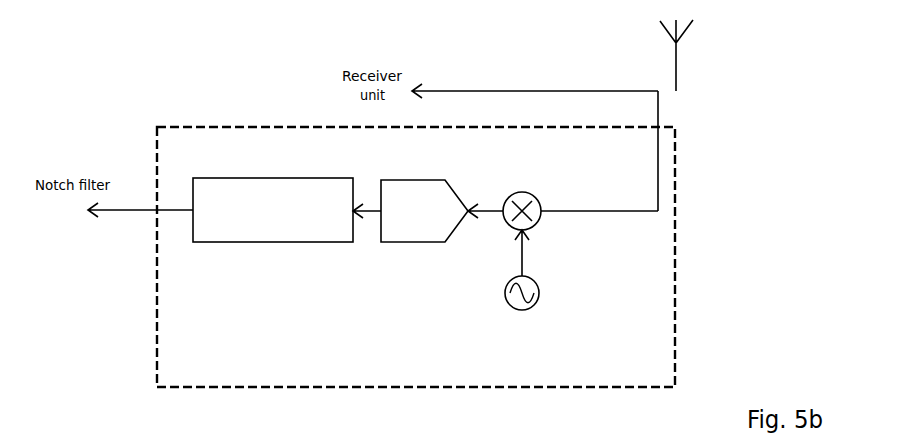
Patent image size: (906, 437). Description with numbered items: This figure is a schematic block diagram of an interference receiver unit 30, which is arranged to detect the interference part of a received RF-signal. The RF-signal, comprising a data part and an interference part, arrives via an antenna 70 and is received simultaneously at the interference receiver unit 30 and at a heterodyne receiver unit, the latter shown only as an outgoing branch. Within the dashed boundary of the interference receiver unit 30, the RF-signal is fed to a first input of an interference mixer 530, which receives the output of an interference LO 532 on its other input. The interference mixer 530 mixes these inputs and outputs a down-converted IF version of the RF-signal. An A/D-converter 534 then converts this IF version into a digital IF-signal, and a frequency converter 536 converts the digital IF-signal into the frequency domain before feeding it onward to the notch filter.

The interference receiver unit 30 is at (416, 257).
The antenna 70 is at (690, 115).
The interference mixer 530 is at (535, 192).
The interference LO 532 is at (535, 278).
The A/D-converter 534 is at (412, 242).
The frequency converter 536 is at (252, 242).